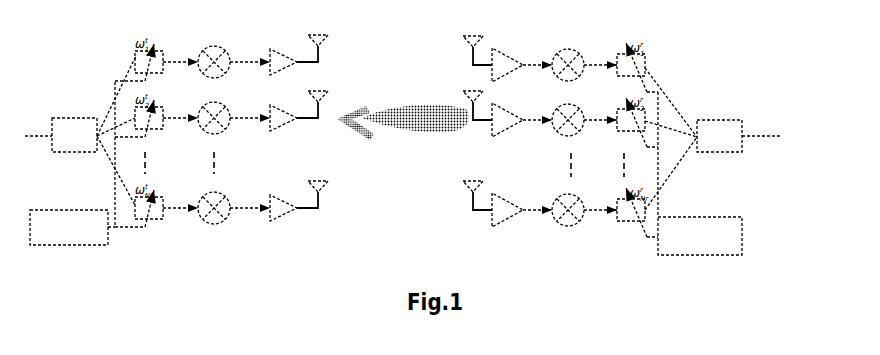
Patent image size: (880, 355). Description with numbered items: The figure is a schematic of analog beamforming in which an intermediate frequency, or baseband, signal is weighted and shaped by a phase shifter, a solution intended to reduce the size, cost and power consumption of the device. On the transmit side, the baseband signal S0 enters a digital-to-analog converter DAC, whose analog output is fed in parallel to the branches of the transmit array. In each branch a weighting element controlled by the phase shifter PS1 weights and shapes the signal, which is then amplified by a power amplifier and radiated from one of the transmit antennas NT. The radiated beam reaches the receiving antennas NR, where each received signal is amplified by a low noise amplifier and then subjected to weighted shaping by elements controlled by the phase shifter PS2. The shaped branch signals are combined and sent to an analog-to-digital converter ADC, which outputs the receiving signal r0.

The baseband signal S0 is at (37, 125).
The digital-to-analog converter DAC is at (74, 135).
The phase shifter PS1 is at (72, 163).
The transmit antennas NT is at (320, 18).
The receiving antennas NR is at (474, 18).
The phase shifter PS2 is at (700, 173).
The analog-to-digital converter ADC is at (719, 136).
The receiving signal r0 is at (766, 130).